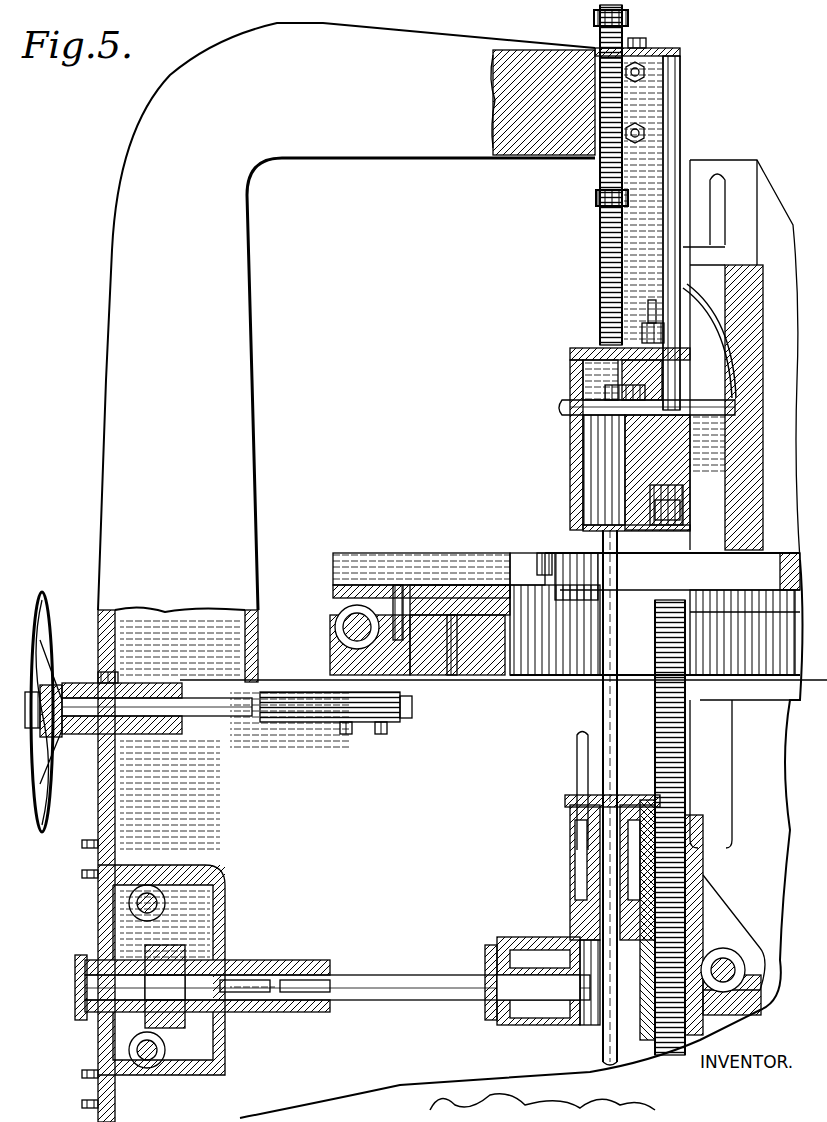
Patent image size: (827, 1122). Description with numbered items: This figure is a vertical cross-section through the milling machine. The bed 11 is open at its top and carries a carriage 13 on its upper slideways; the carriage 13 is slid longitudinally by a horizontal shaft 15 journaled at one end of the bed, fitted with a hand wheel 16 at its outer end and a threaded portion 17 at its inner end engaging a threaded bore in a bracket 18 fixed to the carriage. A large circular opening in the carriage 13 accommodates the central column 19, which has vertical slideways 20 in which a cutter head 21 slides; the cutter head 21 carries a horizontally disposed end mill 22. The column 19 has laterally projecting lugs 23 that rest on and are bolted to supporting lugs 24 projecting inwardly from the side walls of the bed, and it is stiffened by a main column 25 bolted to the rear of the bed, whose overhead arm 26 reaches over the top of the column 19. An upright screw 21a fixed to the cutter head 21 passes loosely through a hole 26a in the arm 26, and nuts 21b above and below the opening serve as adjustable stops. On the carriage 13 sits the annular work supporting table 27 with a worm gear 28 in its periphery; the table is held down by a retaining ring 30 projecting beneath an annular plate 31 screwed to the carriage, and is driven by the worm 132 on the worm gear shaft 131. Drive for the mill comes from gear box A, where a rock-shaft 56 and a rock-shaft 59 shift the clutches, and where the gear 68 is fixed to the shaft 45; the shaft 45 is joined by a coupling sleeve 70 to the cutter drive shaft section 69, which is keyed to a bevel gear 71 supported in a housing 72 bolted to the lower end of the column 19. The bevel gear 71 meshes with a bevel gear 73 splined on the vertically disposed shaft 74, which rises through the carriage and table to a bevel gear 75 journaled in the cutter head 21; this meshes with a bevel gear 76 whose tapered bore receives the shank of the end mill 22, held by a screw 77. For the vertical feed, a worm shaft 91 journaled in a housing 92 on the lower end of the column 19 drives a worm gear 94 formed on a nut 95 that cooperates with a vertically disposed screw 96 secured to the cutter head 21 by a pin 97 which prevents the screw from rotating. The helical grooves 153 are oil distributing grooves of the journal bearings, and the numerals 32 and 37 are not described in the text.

The bed 11 is at (213, 864).
The carriage 13 is at (480, 660).
The horizontal shaft 15 is at (148, 700).
The hand wheel 16 is at (45, 600).
The threaded portion 17 is at (296, 730).
The bracket 18 is at (372, 736).
The column 19 is at (652, 165).
The vertical slideways 20 is at (663, 128).
The cutter head 21 is at (685, 468).
The upright screw 21a is at (600, 262).
The nuts 21b is at (628, 18).
The end mill 22 is at (707, 445).
The laterally projecting lugs 23 is at (706, 690).
The supporting lugs 24 is at (578, 732).
The main column 25 is at (250, 328).
The overhead arm 26 is at (383, 145).
The hole 26a is at (598, 50).
The work supporting table 27 is at (462, 590).
The worm gear 28 is at (398, 590).
The retaining ring 30 is at (420, 675).
The annular plate 31 is at (425, 600).
The bracket 32 is at (752, 280).
The table 37 is at (350, 565).
The shaft 45 is at (257, 975).
The rock-shaft 56 is at (130, 1050).
The rock-shaft 59 is at (155, 890).
The gear 68 is at (170, 950).
The cutter drive shaft section 69 is at (432, 975).
The coupling sleeve 70 is at (315, 950).
The bevel gear 71 is at (590, 1030).
The housing 72 is at (525, 1025).
The bevel gear 73 is at (585, 820).
The vertically disposed shaft 74 is at (590, 768).
The bevel gear 75 is at (570, 430).
The bevel gear 76 is at (605, 405).
The screw 77 is at (560, 408).
The worm shaft 91 is at (745, 965).
The housing 92 is at (705, 910).
The worm gear 94 is at (640, 1000).
The nut 95 is at (703, 862).
The screw 96 is at (600, 718).
The pin 97 is at (683, 522).
The worm gear shaft 131 is at (343, 633).
The worm 132 is at (345, 620).
The helical grooves 153 is at (705, 355).
The gear box A is at (228, 878).